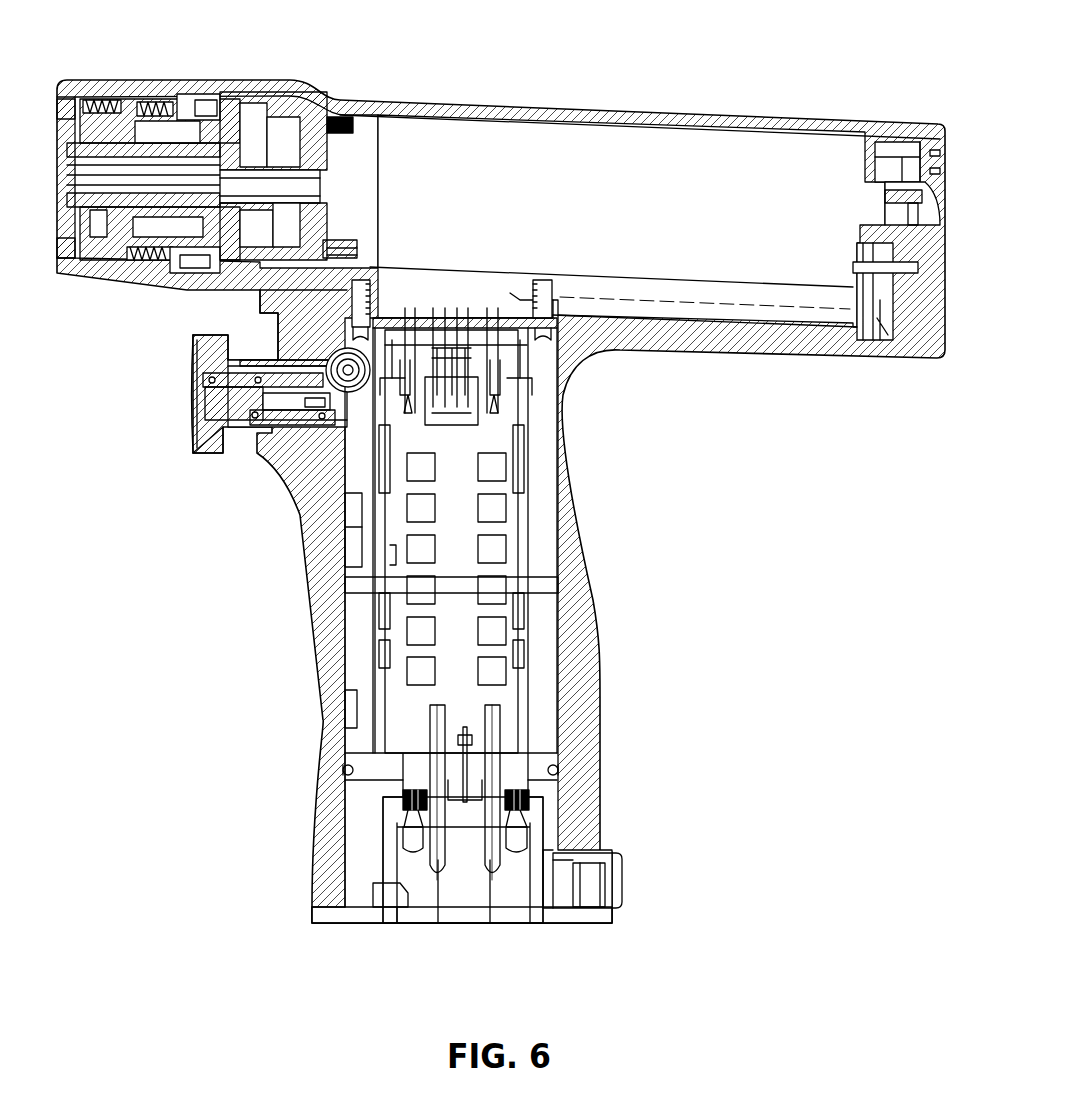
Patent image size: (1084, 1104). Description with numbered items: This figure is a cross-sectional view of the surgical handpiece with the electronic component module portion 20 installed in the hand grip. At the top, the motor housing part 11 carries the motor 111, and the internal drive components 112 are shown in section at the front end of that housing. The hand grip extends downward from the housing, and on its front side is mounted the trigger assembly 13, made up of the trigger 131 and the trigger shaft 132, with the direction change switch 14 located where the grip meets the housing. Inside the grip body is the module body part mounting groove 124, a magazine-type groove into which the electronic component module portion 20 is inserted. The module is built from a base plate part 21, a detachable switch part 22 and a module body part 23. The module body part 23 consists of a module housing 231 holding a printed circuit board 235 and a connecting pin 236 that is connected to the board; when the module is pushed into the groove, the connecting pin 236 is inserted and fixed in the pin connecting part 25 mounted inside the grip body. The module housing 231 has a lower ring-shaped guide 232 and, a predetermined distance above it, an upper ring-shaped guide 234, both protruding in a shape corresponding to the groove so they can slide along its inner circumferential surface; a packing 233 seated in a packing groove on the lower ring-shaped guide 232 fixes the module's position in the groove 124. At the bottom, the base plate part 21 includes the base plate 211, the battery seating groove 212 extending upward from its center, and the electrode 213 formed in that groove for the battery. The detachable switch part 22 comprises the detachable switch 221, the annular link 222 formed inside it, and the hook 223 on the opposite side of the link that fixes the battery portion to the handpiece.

The motor housing part 11 is at (635, 108).
The motor 111 is at (490, 130).
The drive assembly 112 is at (280, 183).
The module body part mounting groove 124 is at (358, 670).
The trigger assembly 13 is at (187, 454).
The trigger 131 is at (205, 455).
The trigger shaft 132 is at (262, 448).
The direction change switch 14 is at (330, 362).
The electronic component module portion 20 is at (535, 726).
The base plate part 21 is at (346, 930).
The base plate 211 is at (372, 918).
The battery seating groove 212 is at (543, 842).
The electrode 213 is at (490, 837).
The detachable switch part 22 is at (627, 878).
The detachable switch 221 is at (610, 895).
The annular link 222 is at (557, 897).
The hook 223 is at (400, 893).
The module body part 23 is at (532, 673).
The module housing 231 is at (526, 620).
The lower ring-shaped guide 232 is at (545, 760).
The packing 233 is at (343, 770).
The upper ring-shaped guide 234 is at (548, 580).
The printed circuit board 235 is at (500, 485).
The connecting pin 236 is at (518, 358).
The pin connecting part 25 is at (563, 335).